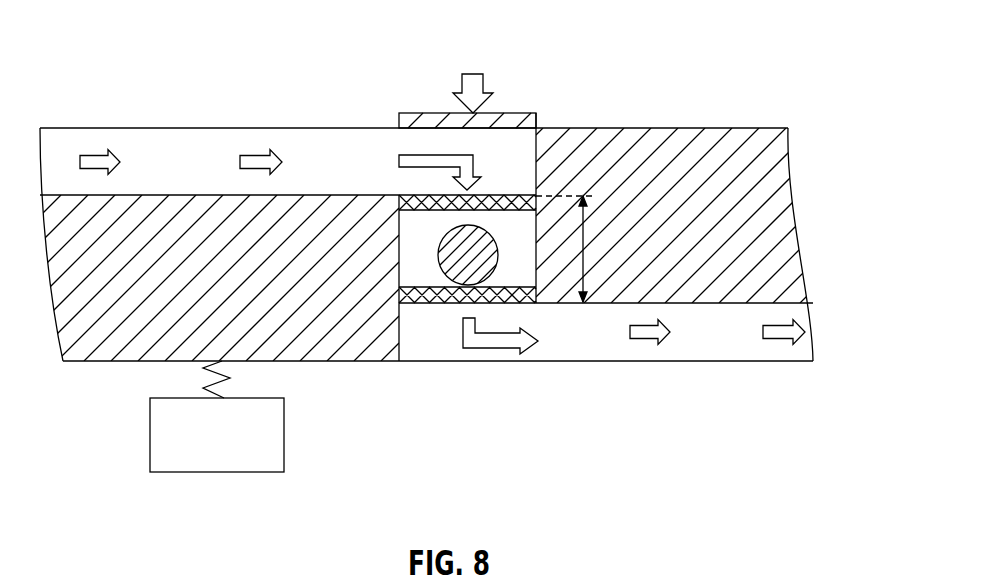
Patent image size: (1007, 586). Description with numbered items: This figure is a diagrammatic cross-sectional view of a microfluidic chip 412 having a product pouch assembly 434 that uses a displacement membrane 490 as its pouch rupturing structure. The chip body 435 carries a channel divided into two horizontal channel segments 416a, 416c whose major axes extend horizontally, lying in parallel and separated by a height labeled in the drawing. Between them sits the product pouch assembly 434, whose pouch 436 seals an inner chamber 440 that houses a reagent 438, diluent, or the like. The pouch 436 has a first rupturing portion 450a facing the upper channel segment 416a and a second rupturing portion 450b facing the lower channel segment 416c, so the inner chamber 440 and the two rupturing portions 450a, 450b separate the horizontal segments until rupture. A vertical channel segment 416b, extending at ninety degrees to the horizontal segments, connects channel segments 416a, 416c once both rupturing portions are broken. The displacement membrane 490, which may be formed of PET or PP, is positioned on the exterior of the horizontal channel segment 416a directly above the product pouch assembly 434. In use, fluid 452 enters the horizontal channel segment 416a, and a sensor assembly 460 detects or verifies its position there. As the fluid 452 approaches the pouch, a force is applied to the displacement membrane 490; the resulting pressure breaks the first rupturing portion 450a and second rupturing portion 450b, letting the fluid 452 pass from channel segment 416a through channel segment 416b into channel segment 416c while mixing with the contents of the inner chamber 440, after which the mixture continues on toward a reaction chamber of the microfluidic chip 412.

The microfluidic chip 412 is at (450, 245).
The channel segment 416a is at (200, 145).
The channel segment 416b is at (397, 248).
The channel segment 416c is at (710, 343).
The product pouch assembly 434 is at (397, 257).
The housing body 435 is at (773, 176).
The pouch 436 is at (407, 268).
The reagent 438 is at (468, 262).
The inner chamber 440 is at (419, 240).
The first rupturing portion 450a is at (525, 195).
The second rupturing portion 450b is at (517, 293).
The fluid 452 is at (88, 150).
The sensor assembly 460 is at (284, 435).
The displacement membrane 490 is at (537, 117).